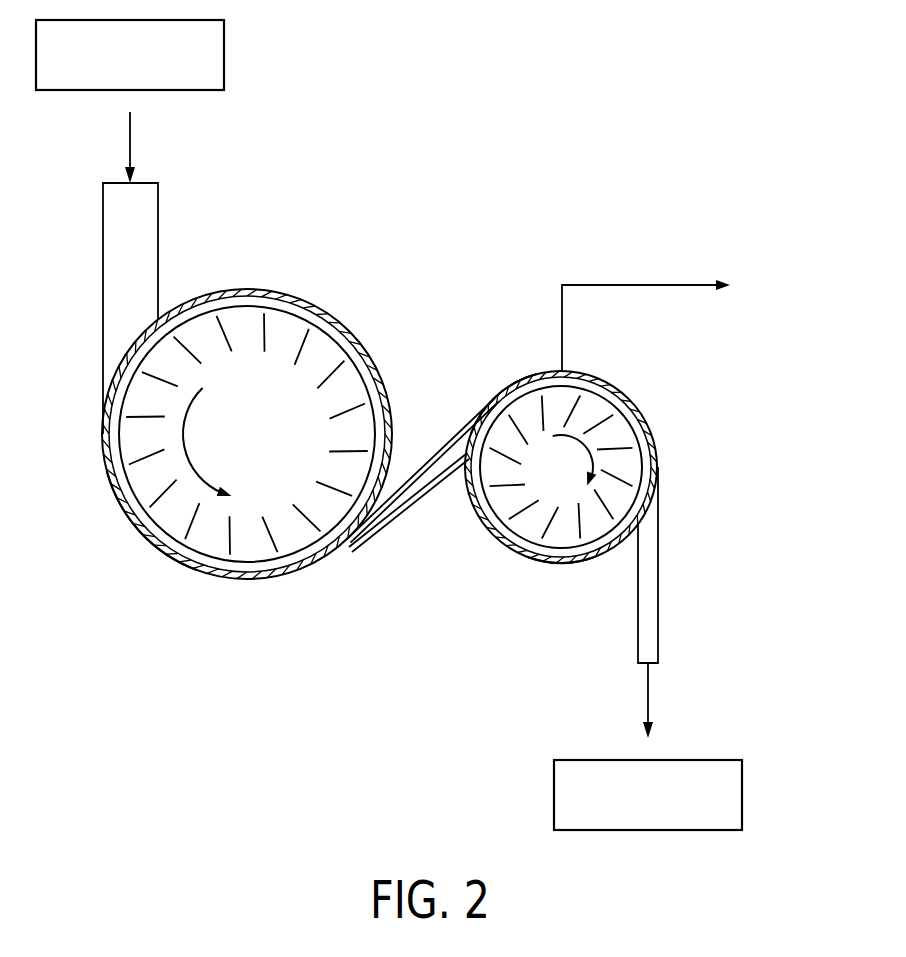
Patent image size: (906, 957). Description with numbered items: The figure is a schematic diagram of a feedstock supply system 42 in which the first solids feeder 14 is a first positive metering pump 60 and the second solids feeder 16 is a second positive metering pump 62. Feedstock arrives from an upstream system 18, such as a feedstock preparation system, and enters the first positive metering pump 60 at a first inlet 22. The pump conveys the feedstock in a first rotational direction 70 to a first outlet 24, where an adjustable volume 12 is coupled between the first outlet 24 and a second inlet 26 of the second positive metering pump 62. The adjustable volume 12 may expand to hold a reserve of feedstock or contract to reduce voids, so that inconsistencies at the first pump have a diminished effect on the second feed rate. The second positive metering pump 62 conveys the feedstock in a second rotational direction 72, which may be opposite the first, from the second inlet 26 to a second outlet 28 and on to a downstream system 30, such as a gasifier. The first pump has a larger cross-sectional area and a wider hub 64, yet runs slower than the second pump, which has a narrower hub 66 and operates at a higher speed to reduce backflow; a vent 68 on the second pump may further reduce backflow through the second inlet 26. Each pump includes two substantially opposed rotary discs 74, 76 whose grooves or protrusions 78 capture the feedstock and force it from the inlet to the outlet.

The adjustable volume 12 is at (426, 485).
The first solids feeder 14 is at (195, 434).
The second solids feeder 16 is at (615, 467).
The upstream system 18 is at (224, 56).
The first inlet 22 is at (103, 308).
The first outlet 24 is at (364, 525).
The second inlet 26 is at (483, 416).
The second outlet 28 is at (658, 563).
The downstream system 30 is at (742, 796).
The feedstock supply system 42 is at (652, 77).
The first positive metering pump 60 is at (120, 481).
The second positive metering pump 62 is at (620, 432).
The wider hub 64 is at (157, 548).
The narrower hub 66 is at (553, 567).
The vent 68 is at (562, 345).
The first rotational direction 70 is at (187, 443).
The second rotational direction 72 is at (573, 447).
The rotary disc 74 is at (379, 435).
The rotary disc 76 is at (348, 341).
The grooves or protrusions 78 is at (343, 374).